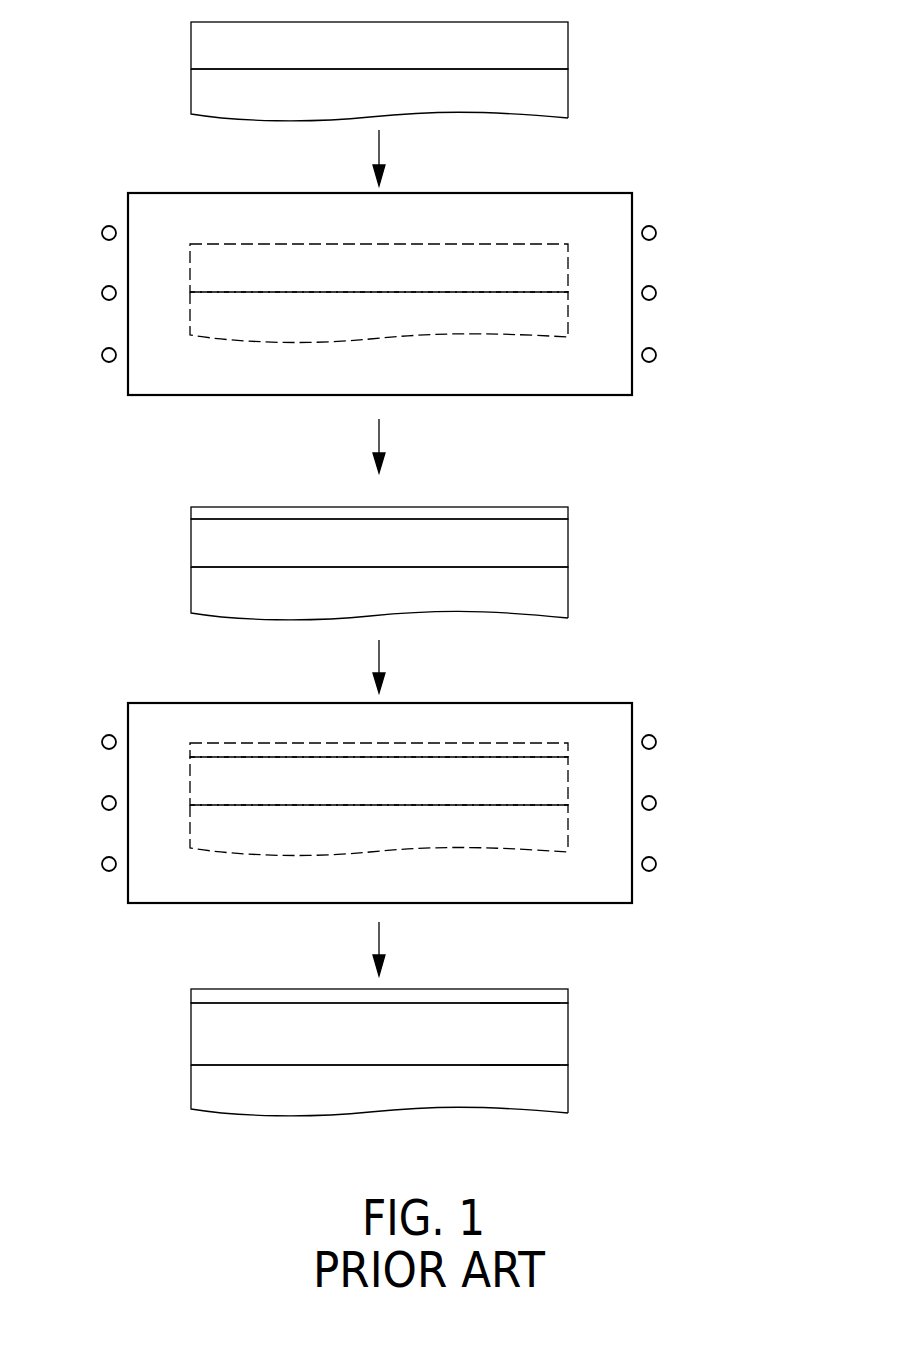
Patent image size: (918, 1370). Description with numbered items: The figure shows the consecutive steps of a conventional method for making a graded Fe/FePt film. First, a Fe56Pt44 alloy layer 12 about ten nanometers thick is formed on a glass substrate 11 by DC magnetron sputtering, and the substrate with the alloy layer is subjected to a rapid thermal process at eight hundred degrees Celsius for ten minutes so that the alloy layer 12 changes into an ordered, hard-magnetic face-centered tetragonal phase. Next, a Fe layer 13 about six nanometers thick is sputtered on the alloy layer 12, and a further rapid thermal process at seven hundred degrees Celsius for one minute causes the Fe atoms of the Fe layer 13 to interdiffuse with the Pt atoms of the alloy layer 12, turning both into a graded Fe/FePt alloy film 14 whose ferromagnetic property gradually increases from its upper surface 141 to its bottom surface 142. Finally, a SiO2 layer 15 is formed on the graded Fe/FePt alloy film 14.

The glass substrate 11 is at (558, 99).
The Fe56Pt44 alloy layer 12 is at (558, 50).
The Fe layer 13 is at (558, 514).
The graded Fe/FePt alloy film 14 is at (728, 708).
The upper surface 141 is at (523, 1002).
The bottom surface 142 is at (519, 1066).
The SiO2 layer 15 is at (558, 997).